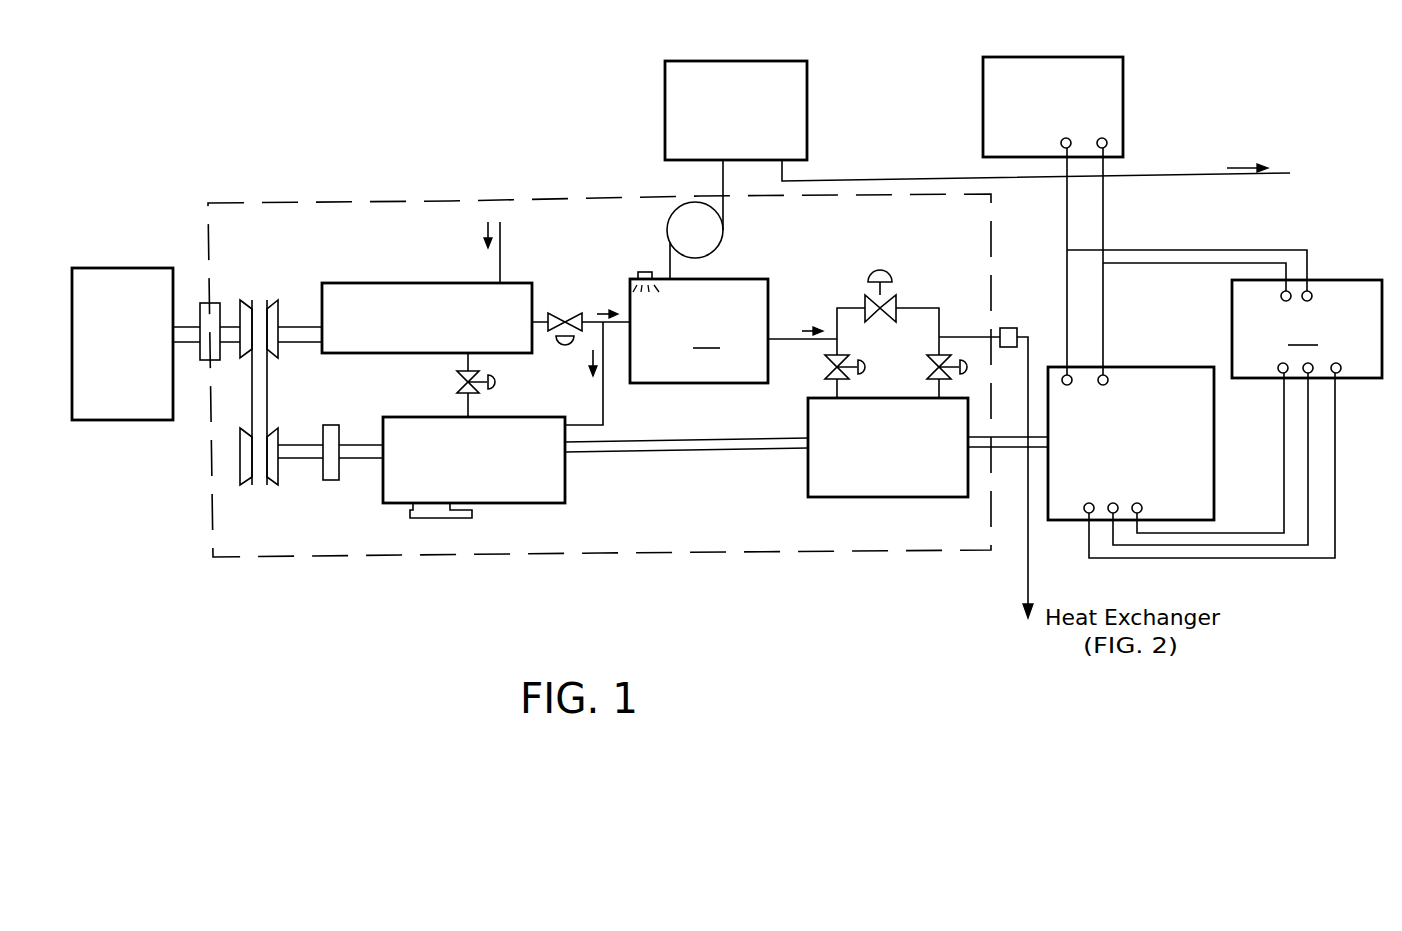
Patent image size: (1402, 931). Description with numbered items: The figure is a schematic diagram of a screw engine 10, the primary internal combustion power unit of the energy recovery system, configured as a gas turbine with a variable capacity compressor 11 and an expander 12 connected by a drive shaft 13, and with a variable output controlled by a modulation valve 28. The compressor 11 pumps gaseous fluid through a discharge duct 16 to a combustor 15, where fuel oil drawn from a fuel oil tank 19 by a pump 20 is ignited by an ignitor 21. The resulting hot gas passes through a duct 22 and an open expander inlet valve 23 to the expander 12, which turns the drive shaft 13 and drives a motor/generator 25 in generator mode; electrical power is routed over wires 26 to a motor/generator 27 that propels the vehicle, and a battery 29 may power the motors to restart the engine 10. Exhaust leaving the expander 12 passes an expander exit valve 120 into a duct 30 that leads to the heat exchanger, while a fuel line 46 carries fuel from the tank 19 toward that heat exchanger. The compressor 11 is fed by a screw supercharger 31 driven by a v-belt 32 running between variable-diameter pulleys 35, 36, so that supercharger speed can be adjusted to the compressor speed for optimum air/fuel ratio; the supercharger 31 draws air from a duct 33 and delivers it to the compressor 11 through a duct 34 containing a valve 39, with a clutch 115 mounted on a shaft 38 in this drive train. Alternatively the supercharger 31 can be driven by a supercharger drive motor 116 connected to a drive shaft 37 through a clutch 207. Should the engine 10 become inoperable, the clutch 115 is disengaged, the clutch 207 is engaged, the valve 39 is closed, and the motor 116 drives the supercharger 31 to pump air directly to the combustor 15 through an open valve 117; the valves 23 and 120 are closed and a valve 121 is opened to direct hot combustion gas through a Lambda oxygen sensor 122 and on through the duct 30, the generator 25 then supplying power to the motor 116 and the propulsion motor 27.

The screw engine 10 is at (280, 192).
The supercharger drive motor 116 is at (155, 421).
The clutch 207 is at (214, 302).
The pulley 35 is at (275, 300).
The drive shaft 37 is at (297, 345).
The v-belt 32 is at (270, 392).
The pulley 36 is at (282, 473).
The clutch 115 is at (338, 425).
The shaft 38 is at (358, 459).
The screw supercharger 31 is at (405, 290).
The duct 33 is at (505, 237).
The valve 117 is at (566, 313).
The duct 34 is at (468, 358).
The valve 39 is at (460, 383).
The variable capacity compressor 11 is at (566, 480).
The modulation valve 28 is at (462, 518).
The discharge duct 16 is at (604, 410).
The combustor 15 is at (699, 331).
The ignitor 21 is at (640, 272).
The pump 20 is at (724, 234).
The fuel oil tank 19 is at (808, 85).
The duct 22 is at (785, 339).
The valve 121 is at (897, 301).
The expander inlet valve 23 is at (828, 366).
The expander exit valve 120 is at (934, 365).
The Lambda O2 sensor 122 is at (1010, 328).
The duct 30 is at (1030, 553).
The expander 12 is at (808, 489).
The drive shaft 13 is at (664, 452).
The motor/generator 25 is at (1204, 493).
The battery 29 is at (1124, 74).
The fuel line 46 is at (1160, 177).
The motor/generator 27 is at (1307, 329).
The wires 26 is at (1285, 512).